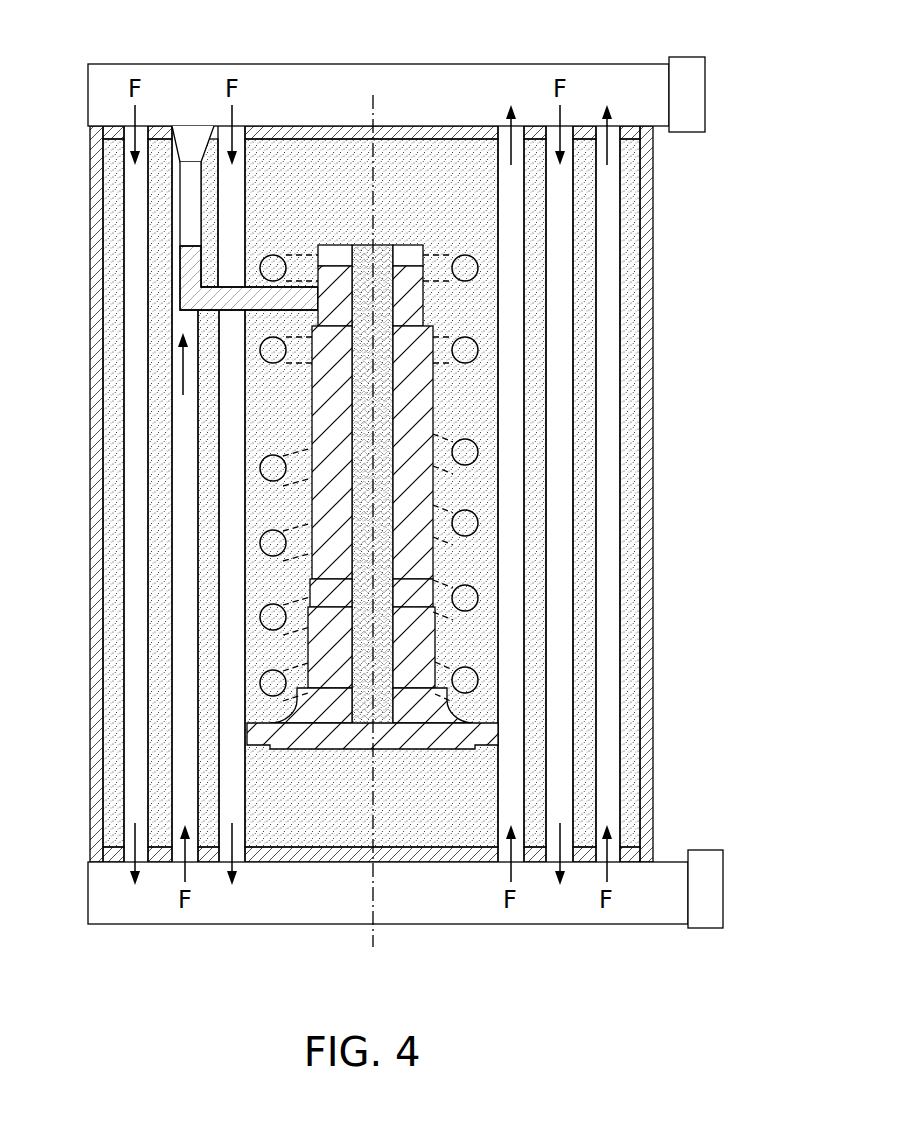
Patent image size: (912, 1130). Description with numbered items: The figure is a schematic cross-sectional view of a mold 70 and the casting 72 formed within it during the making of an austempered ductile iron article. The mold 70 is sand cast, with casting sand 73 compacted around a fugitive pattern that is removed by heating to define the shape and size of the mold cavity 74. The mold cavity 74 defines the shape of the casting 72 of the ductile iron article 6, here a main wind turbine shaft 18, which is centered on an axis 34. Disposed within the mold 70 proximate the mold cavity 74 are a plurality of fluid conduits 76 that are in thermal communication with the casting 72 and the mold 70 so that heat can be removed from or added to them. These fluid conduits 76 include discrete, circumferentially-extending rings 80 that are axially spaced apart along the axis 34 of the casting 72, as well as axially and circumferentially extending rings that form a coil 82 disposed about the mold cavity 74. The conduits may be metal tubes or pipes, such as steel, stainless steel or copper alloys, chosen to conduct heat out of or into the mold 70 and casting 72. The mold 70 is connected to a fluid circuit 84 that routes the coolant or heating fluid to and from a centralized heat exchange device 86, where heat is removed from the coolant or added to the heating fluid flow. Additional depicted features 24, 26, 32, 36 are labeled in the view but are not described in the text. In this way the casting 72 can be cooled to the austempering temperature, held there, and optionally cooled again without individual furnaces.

The ductile iron article 6 is at (410, 195).
The main wind turbine shaft 18 is at (414, 236).
The base plate 24 is at (318, 749).
The feed tube 26 is at (337, 244).
The central shaft 32 is at (350, 650).
The axis 34 is at (376, 935).
The flange 36 is at (300, 702).
The mold 70 is at (669, 158).
The casting 72 is at (438, 315).
The casting sand 73 is at (346, 170).
The mold cavity 74 is at (318, 505).
The fluid conduit 76 is at (492, 336).
The circumferentially-extending rings 80 is at (482, 257).
The coil 82 is at (478, 670).
The fluid circuit 84 is at (474, 64).
The heat exchange device 86 is at (705, 90).